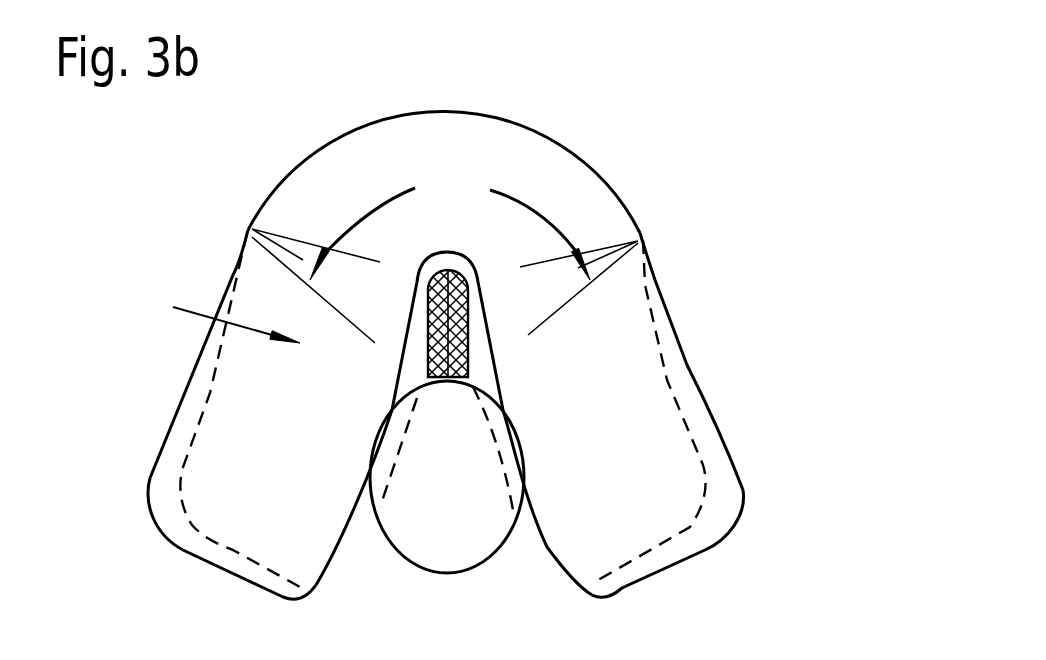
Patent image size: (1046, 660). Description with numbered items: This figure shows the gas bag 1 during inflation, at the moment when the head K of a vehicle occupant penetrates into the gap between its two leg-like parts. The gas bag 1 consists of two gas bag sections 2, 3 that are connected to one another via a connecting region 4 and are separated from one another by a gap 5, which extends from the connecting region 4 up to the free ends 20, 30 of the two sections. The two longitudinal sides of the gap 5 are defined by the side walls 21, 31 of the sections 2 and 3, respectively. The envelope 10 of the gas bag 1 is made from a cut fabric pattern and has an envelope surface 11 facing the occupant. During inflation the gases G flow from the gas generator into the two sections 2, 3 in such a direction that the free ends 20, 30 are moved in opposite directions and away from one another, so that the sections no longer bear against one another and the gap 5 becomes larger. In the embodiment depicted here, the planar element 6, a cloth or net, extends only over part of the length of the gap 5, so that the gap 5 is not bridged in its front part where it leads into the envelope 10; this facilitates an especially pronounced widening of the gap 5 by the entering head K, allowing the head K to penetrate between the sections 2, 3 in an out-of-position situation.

The gas bag 1 is at (436, 68).
The gas bag section 2 is at (236, 424).
The gas bag section 3 is at (643, 436).
The connecting region 4 is at (444, 119).
The gap 5 is at (490, 354).
The planar element 6 is at (430, 355).
The envelope 10 is at (314, 117).
The envelope surface 11 is at (220, 309).
The free end 20 is at (200, 543).
The side wall 21 is at (373, 453).
The free end 30 is at (687, 530).
The side wall 31 is at (490, 378).
The gases G is at (347, 227).
The head K is at (437, 527).